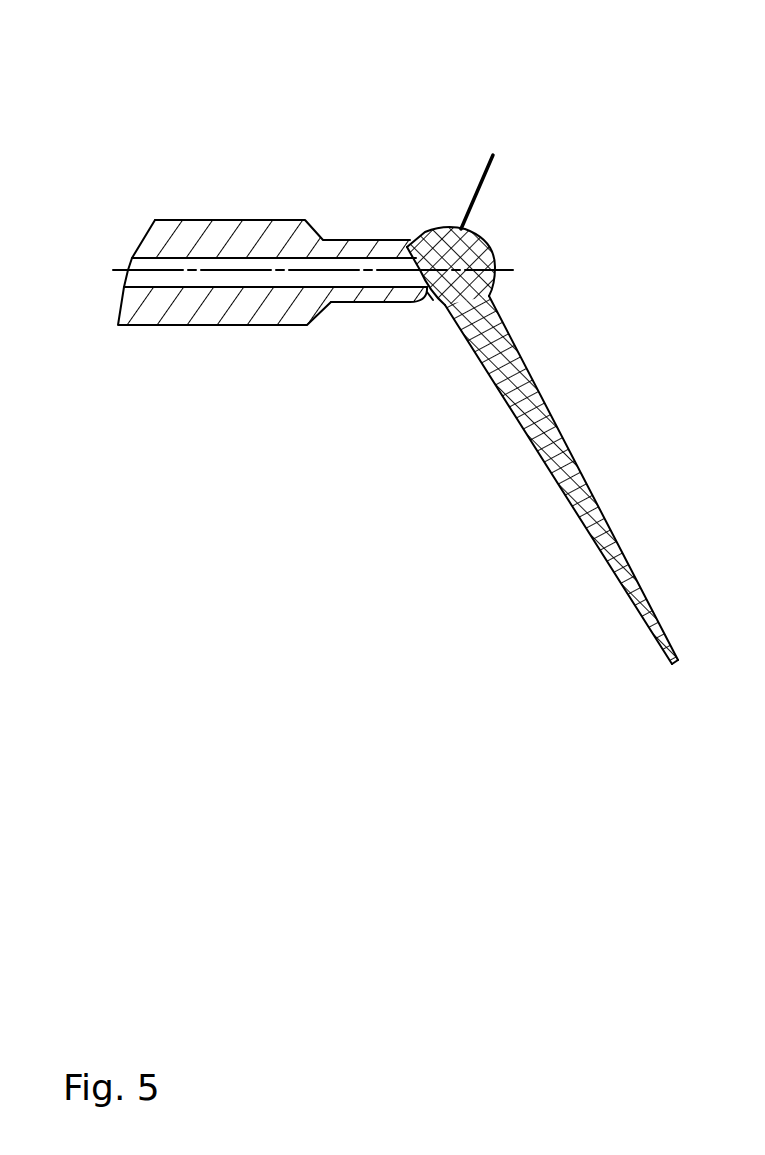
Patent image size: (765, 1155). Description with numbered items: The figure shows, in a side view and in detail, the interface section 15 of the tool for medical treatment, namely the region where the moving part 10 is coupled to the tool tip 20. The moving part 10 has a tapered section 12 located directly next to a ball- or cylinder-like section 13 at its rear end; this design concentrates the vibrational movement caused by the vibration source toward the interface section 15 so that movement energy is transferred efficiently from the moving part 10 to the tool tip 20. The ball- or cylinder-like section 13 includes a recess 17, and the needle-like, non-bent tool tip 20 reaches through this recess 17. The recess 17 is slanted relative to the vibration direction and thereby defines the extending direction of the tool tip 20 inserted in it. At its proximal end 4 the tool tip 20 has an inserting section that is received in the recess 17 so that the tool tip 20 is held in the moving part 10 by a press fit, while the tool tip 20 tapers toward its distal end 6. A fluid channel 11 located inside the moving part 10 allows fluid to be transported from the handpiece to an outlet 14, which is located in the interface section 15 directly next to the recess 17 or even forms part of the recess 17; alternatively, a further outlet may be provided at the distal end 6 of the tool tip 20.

The proximal end 4 is at (432, 224).
The distal end 6 is at (677, 668).
The moving part 10 is at (285, 218).
The fluid channel 11 is at (178, 265).
The tapered section 12 is at (368, 321).
The ball- or cylinder-like section 13 is at (493, 246).
The outlet 14 is at (438, 307).
The interface section 15 is at (521, 189).
The recess 17 is at (537, 327).
The tool tip 20 is at (558, 453).